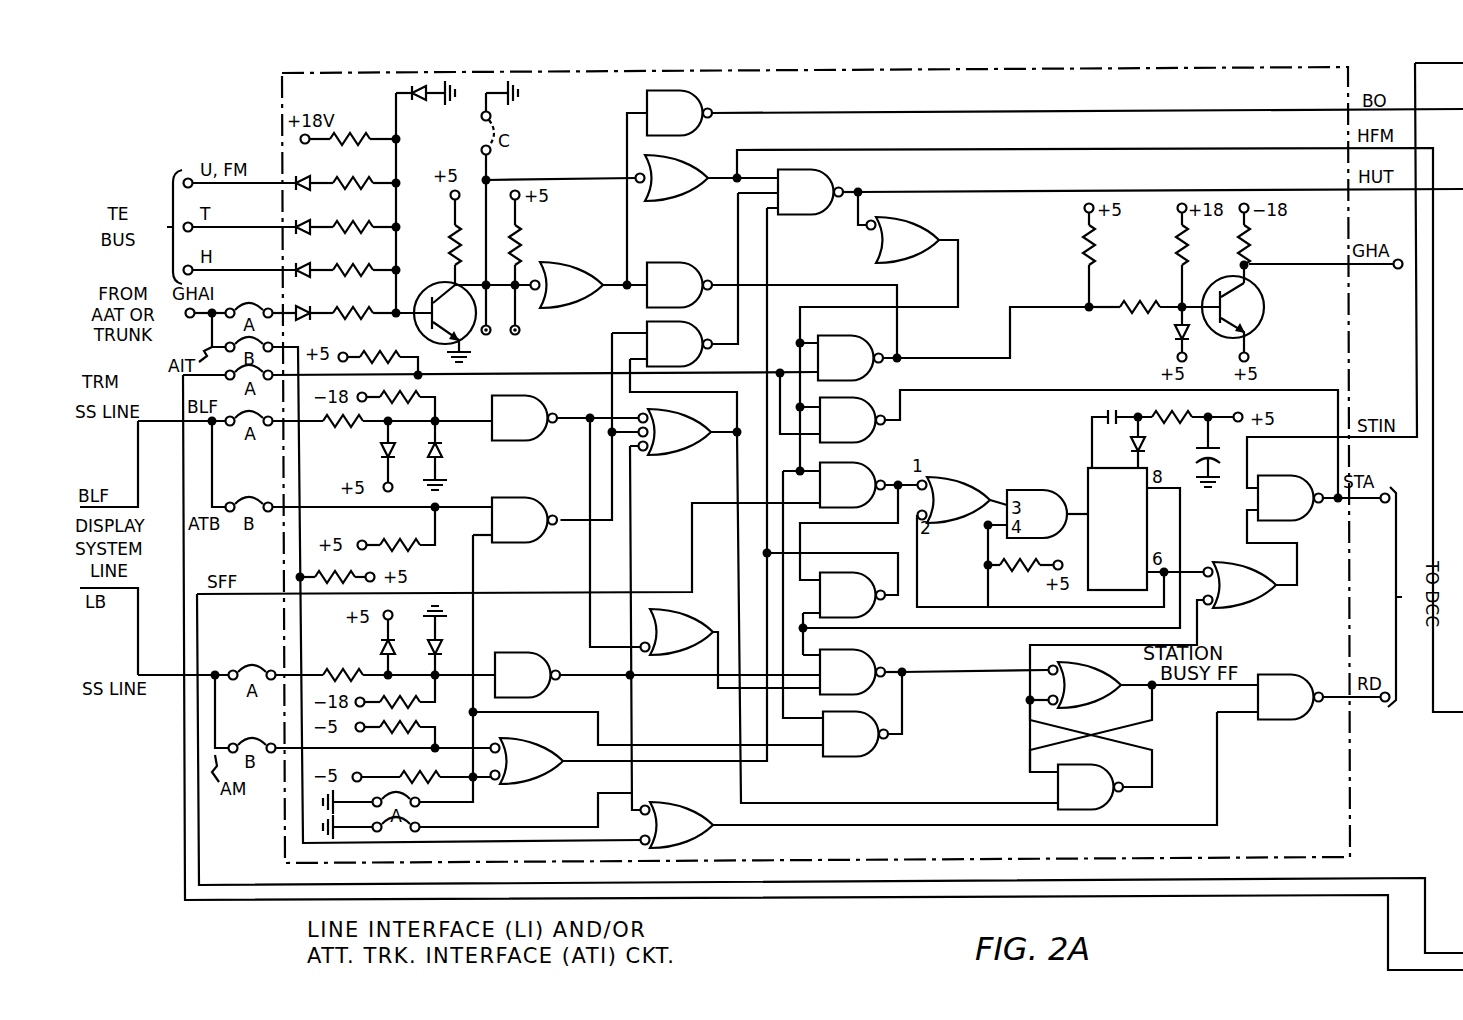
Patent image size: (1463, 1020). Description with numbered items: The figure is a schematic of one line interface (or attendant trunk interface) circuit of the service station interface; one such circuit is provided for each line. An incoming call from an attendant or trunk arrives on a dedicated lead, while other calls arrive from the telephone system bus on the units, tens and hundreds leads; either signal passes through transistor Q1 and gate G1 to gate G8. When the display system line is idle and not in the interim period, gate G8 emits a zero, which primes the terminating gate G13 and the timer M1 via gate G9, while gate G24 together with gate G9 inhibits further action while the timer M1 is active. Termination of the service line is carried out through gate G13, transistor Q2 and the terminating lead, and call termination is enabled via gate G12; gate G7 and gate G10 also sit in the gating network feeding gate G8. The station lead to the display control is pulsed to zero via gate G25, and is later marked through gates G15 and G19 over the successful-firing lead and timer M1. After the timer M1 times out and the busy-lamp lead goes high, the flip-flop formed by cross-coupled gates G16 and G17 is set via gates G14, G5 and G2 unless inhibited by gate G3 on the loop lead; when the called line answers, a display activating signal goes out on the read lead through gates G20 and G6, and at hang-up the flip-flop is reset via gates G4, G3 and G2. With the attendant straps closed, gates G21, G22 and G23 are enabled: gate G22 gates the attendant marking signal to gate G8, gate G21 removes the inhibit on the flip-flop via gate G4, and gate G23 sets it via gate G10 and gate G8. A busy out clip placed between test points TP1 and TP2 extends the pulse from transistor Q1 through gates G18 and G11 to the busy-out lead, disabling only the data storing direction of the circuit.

The gate G1 is at (672, 178).
The gate G2 is at (524, 418).
The gate G3 is at (527, 675).
The gate G4 is at (675, 432).
The gate G5 is at (677, 632).
The gate G6 is at (677, 825).
The gate G7 is at (679, 344).
The gate G8 is at (810, 192).
The gate G9 is at (852, 485).
The gate G10 is at (903, 240).
The gate G11 is at (567, 285).
The gate G12 is at (679, 285).
The terminating gate G13 is at (850, 358).
The gate G14 is at (852, 672).
The gate G15 is at (1240, 585).
The gate G16 is at (1085, 685).
The gate G17 is at (1090, 787).
The gate G18 is at (679, 113).
The gate G19 is at (1290, 498).
The gate G20 is at (1290, 697).
The gate G21 is at (524, 520).
The gate G22 is at (527, 761).
The gate G23 is at (855, 734).
The gate G24 is at (852, 595).
The gate G25 is at (852, 420).
The transistor Q1 is at (422, 292).
The transistor Q2 is at (1265, 311).
The timer M1 is at (1117, 529).
The test point TP1 is at (496, 344).
The test point TP2 is at (539, 336).